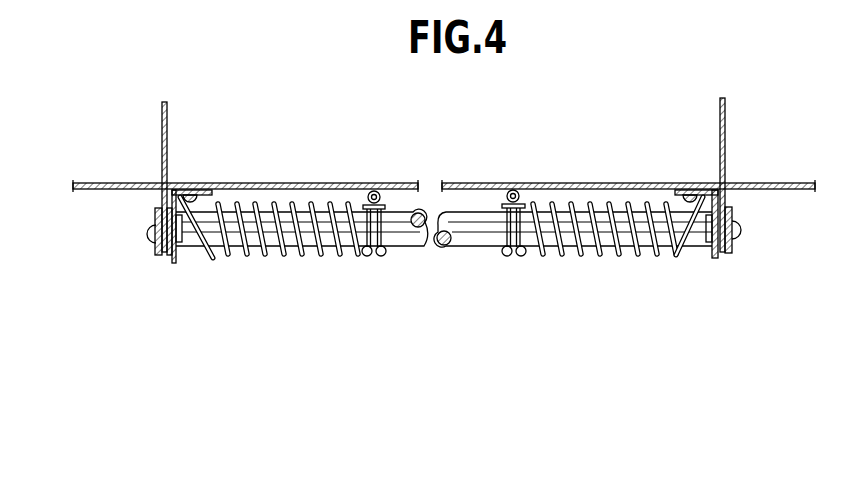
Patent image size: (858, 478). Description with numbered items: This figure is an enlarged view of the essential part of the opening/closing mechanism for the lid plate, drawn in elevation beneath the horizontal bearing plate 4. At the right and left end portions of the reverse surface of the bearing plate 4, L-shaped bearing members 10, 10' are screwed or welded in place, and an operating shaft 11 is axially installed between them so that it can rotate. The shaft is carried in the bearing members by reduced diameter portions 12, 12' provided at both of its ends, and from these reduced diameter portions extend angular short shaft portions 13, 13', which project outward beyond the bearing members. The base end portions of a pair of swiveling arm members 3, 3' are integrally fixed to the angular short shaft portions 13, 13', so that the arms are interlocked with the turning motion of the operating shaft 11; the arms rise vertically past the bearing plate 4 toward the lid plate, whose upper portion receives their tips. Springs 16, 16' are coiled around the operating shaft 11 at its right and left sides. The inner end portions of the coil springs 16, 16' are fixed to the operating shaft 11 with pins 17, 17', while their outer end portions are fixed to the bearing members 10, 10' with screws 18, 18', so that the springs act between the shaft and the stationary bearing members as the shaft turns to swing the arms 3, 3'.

The swiveling arm member 3 is at (776, 170).
The swiveling arm member 3' is at (114, 177).
The bearing plate 4 is at (458, 182).
The L-shaped bearing member 10 is at (702, 263).
The L-shaped bearing member 10' is at (181, 265).
The operating shaft 11 is at (470, 246).
The reduced diameter portion 12 is at (779, 228).
The reduced diameter portion 12' is at (96, 232).
The angular short shaft portion 13 is at (783, 247).
The angular short shaft portion 13' is at (111, 270).
The coil spring 16 is at (604, 270).
The coil spring 16' is at (288, 269).
The pin 17 is at (528, 169).
The pin 17' is at (371, 171).
The screw 18 is at (690, 166).
The screw 18' is at (201, 174).